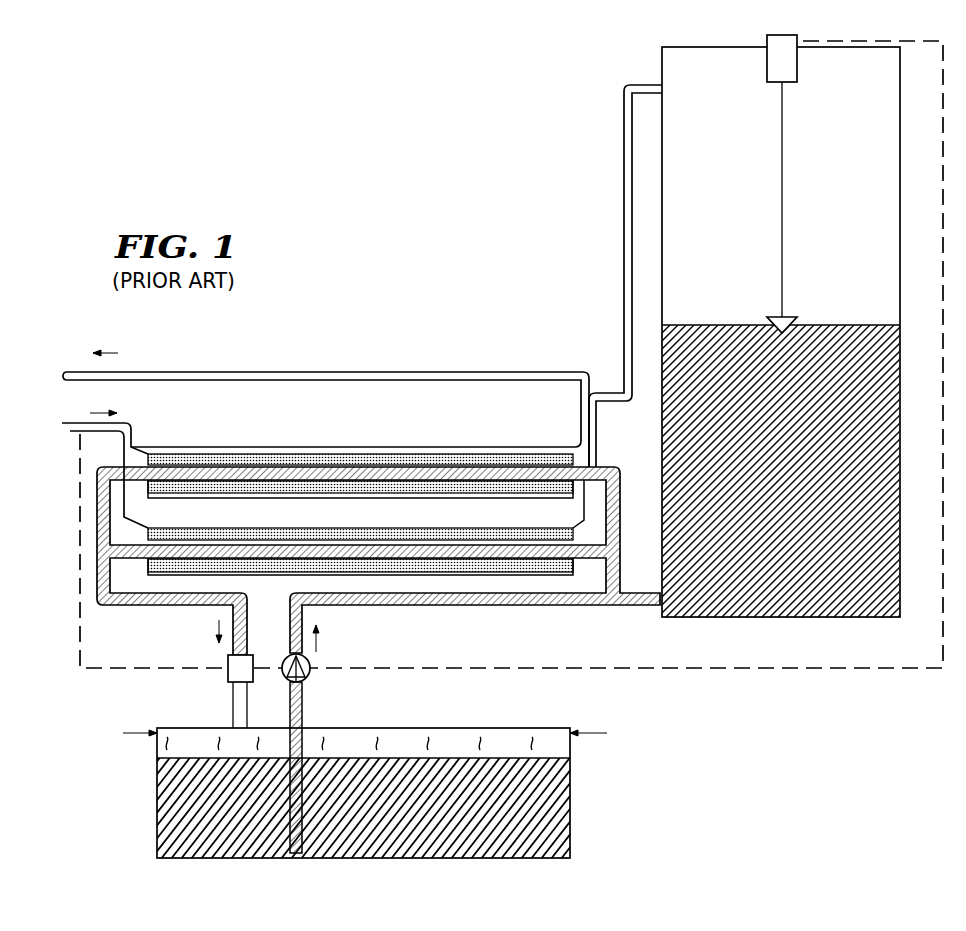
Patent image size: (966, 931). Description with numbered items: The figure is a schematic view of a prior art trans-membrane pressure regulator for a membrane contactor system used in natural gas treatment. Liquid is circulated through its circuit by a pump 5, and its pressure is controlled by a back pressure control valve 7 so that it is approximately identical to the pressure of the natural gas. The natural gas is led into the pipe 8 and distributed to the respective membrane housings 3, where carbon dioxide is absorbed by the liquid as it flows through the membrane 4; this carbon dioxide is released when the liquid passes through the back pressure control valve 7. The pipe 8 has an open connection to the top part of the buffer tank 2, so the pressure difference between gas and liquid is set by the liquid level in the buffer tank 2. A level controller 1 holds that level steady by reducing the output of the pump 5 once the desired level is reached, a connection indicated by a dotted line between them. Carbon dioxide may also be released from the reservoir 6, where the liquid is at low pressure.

The level controller 1 is at (774, 63).
The buffer tank 2 is at (903, 142).
The membrane housings 3 is at (565, 496).
The membrane 4 is at (465, 496).
The pump 5 is at (307, 676).
The reservoir 6 is at (157, 806).
The back pressure control valve 7 is at (228, 672).
The pipe 8 is at (68, 429).